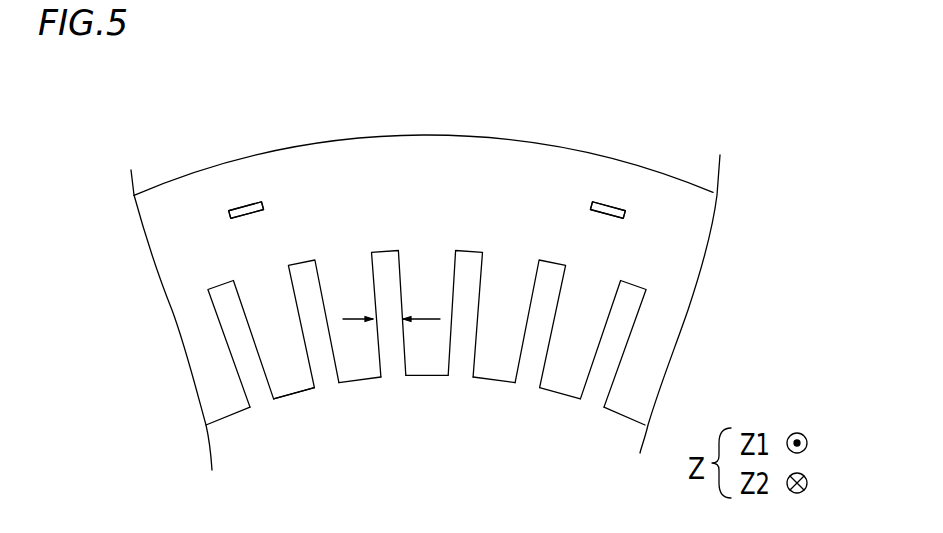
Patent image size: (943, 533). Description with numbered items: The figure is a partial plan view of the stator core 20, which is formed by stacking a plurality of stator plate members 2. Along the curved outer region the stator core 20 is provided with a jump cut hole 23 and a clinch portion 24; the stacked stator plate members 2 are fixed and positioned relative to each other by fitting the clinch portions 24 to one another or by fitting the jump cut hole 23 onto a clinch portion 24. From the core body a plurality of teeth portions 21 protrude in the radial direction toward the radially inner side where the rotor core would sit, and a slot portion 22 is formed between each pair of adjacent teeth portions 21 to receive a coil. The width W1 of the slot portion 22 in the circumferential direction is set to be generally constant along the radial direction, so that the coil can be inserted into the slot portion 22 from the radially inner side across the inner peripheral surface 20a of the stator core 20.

The stator plate member 2 is at (402, 150).
The stator core 20 is at (406, 244).
The inner peripheral surface 20a is at (292, 402).
The teeth portion 21 is at (351, 353).
The slot portion 22 is at (380, 358).
The jump cut hole 23 is at (243, 208).
The clinch portion 24 is at (427, 210).
The width of the slot portion W1 is at (394, 301).